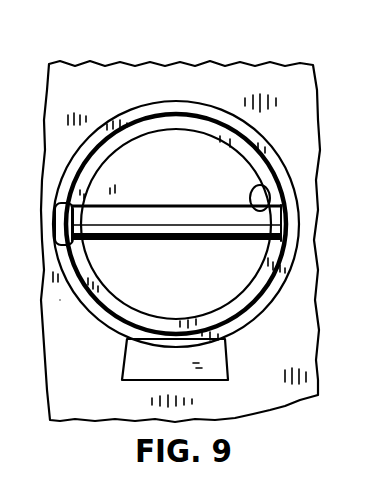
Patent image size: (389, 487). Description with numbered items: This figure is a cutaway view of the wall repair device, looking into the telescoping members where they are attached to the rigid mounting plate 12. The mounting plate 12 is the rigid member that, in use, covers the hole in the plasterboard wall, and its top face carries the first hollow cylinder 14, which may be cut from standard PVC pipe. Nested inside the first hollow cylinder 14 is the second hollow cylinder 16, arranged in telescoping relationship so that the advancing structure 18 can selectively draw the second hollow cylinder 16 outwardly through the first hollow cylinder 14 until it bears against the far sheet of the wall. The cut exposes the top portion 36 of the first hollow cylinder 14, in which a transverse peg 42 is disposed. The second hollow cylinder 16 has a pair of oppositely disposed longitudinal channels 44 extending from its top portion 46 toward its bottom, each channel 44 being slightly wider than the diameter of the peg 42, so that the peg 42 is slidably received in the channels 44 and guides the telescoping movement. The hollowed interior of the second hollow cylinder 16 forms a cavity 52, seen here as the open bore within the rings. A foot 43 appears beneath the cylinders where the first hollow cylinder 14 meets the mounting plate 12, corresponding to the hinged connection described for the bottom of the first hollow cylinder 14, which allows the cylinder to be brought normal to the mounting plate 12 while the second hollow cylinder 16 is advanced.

The rigid mounting plate 12 is at (87, 94).
The first hollow cylinder 14 is at (205, 191).
The second hollow cylinder 16 is at (212, 125).
The advancing structure 18 is at (292, 186).
The top portion 36 is at (151, 102).
The peg 42 is at (72, 231).
The base 43 is at (228, 342).
The longitudinal channels 44 is at (70, 206).
The top portion 46 is at (31, 310).
The cavity 52 is at (222, 271).